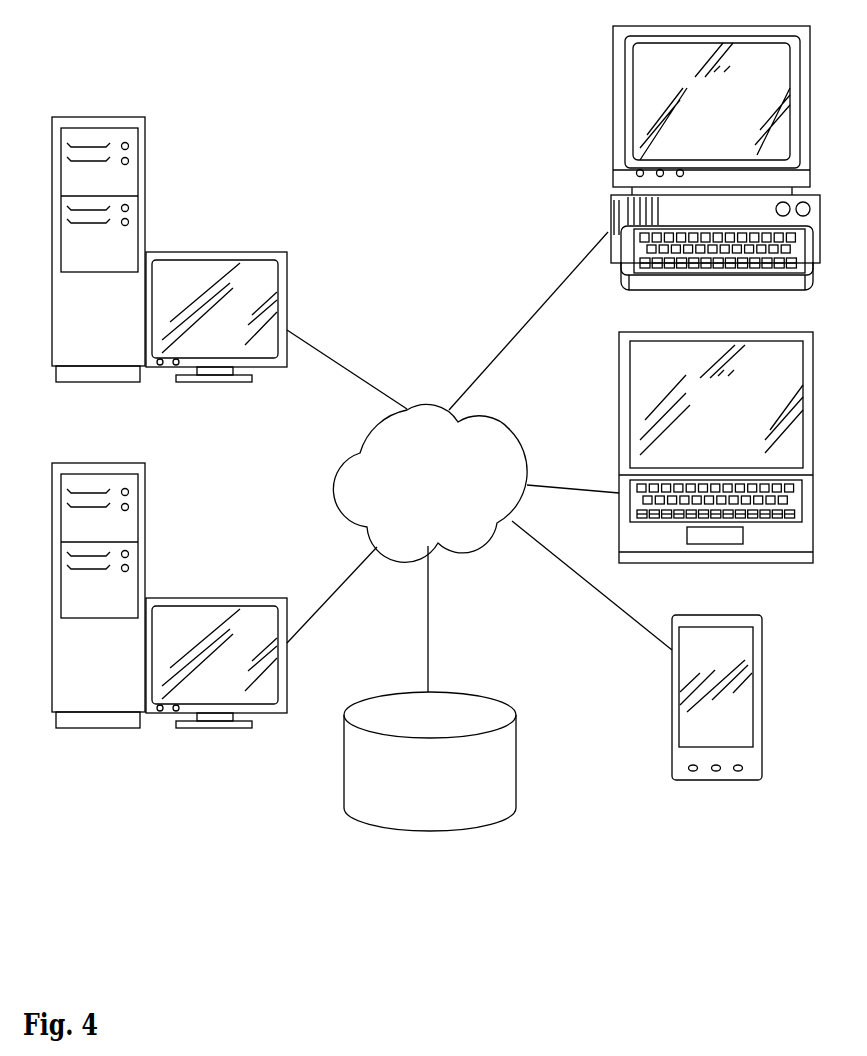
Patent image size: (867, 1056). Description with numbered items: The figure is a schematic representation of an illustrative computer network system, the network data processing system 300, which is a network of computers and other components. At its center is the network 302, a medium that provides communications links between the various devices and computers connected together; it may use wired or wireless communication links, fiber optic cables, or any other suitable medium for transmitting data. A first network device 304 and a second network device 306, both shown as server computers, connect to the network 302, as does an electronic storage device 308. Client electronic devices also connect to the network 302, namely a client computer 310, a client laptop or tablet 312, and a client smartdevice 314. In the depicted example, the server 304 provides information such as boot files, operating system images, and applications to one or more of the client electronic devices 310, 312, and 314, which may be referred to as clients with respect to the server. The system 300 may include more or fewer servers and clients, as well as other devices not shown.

The network data processing system 300 is at (404, 212).
The network 302 is at (510, 427).
The first network device 304 is at (82, 327).
The second network device 306 is at (82, 678).
The electronic storage device 308 is at (344, 757).
The client computer 310 is at (697, 111).
The client laptop or tablet 312 is at (735, 420).
The client smartdevice 314 is at (762, 665).